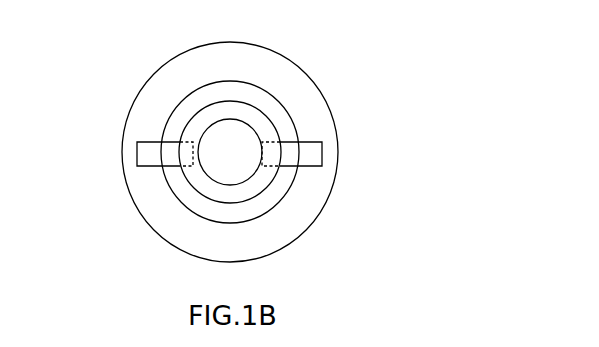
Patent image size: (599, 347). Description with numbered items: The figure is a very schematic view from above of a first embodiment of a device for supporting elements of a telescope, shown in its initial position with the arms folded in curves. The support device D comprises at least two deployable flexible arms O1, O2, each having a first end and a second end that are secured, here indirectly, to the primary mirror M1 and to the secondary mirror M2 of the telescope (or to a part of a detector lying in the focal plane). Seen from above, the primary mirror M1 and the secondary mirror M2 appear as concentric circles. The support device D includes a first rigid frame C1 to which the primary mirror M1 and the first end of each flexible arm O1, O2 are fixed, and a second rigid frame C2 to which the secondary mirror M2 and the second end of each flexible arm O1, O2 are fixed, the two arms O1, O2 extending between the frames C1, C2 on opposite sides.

The first rigid frame C1 is at (153, 237).
The second rigid frame C2 is at (222, 107).
The primary mirror M1 is at (265, 213).
The secondary mirror M2 is at (213, 133).
The first deployable flexible arm O1 is at (150, 142).
The second deployable flexible arm O2 is at (312, 142).
The support device D is at (360, 52).